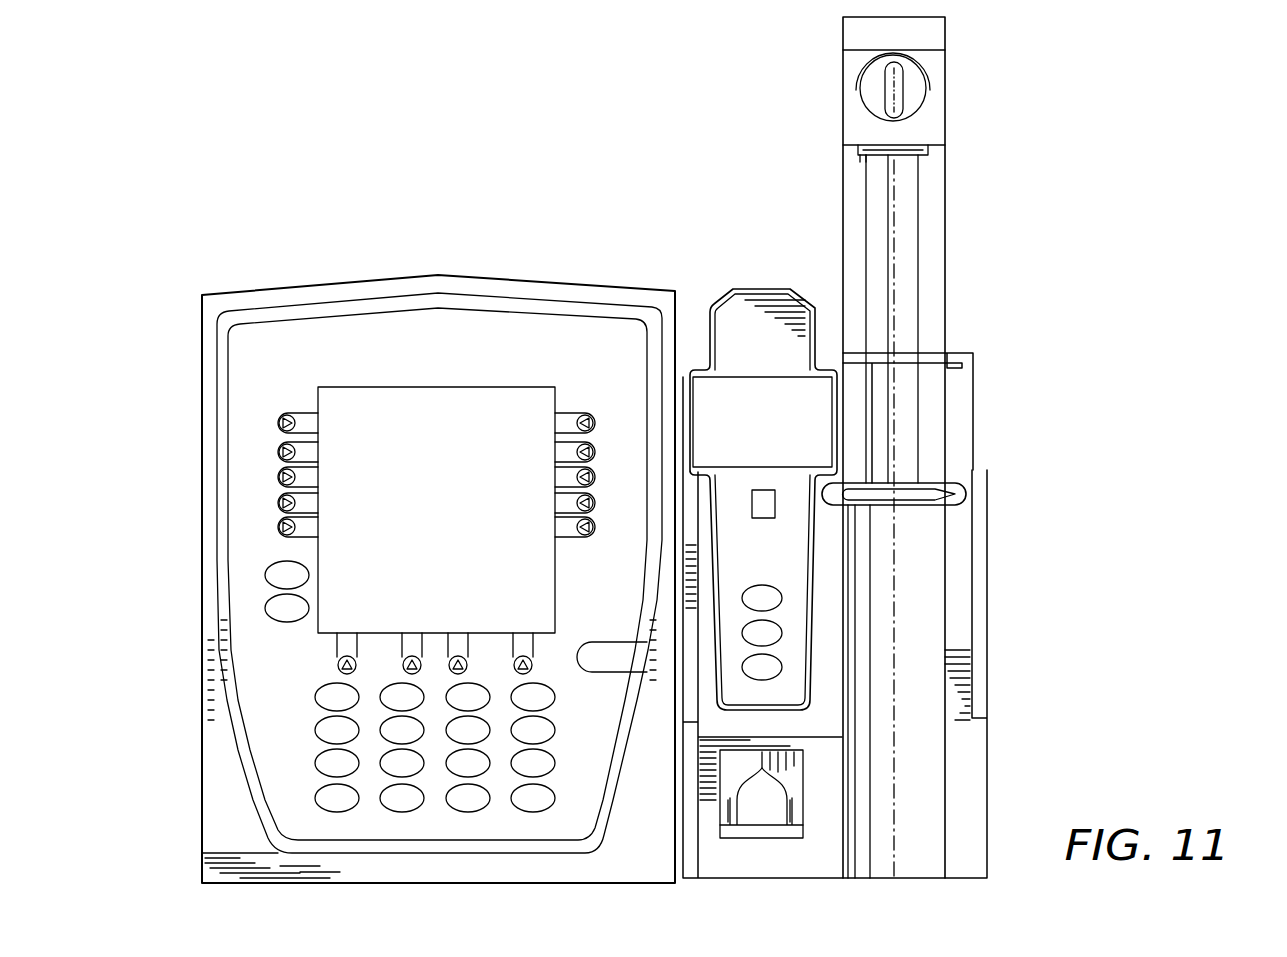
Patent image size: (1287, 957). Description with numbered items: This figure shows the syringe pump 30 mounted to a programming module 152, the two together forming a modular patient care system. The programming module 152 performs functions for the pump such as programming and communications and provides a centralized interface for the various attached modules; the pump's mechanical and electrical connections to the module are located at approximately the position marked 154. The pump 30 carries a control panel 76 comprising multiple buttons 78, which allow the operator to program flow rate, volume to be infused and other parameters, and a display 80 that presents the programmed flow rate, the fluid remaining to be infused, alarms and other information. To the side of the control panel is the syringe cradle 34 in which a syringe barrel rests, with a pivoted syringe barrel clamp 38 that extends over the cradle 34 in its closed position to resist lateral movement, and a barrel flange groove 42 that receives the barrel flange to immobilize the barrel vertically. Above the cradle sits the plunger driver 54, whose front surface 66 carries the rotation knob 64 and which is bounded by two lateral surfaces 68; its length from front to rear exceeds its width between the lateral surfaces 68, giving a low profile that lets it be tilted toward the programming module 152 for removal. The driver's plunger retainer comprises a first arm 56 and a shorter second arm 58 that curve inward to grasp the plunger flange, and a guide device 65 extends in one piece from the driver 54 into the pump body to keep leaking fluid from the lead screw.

The programming module 152 is at (236, 291).
The mechanical and electrical connections 154 is at (675, 395).
The display 80 is at (705, 392).
The control panel 76 is at (740, 322).
The syringe pump 30 is at (714, 461).
The buttons 78 is at (742, 520).
The syringe cradle 34 is at (920, 780).
The syringe barrel clamp 38 is at (955, 493).
The barrel flange groove 42 is at (965, 362).
The plunger driver 54 is at (946, 70).
The rotation knob 64 is at (893, 78).
The front surface 66 is at (858, 130).
The lateral surfaces 68 is at (946, 126).
The first arm 56 is at (928, 148).
The second arm 58 is at (860, 155).
The guide device 65 is at (908, 223).